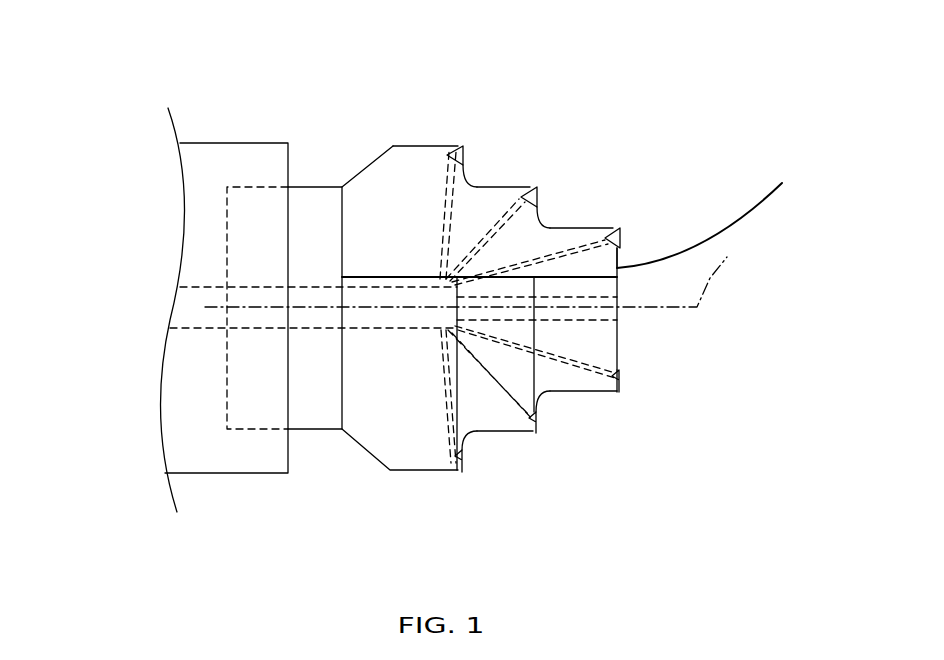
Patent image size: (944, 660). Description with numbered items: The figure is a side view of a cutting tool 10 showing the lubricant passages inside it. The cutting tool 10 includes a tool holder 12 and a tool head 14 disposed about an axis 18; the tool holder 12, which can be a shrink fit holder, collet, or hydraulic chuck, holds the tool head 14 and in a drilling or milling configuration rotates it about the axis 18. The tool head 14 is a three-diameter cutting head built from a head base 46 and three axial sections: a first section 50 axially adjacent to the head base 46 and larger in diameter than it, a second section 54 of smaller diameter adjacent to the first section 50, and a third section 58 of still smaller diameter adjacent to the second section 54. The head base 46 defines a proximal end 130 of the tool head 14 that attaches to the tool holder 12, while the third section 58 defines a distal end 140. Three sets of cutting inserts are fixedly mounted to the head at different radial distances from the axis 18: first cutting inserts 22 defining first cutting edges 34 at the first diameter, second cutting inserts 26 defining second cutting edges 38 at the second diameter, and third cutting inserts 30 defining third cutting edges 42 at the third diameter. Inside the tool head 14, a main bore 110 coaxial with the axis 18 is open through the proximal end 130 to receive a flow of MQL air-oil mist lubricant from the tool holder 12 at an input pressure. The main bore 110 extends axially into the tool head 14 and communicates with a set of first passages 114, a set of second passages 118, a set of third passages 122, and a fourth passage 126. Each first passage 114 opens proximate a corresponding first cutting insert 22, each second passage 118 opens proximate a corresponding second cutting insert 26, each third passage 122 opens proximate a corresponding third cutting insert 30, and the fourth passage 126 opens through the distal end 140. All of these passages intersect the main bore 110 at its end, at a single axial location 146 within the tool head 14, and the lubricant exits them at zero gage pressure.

The cutting tool 10 is at (272, 45).
The tool holder 12 is at (207, 148).
The tool head 14 is at (360, 427).
The axis 18 is at (479, 271).
The first cutting inserts 22 is at (463, 147).
The second cutting inserts 26 is at (536, 186).
The third cutting inserts 30 is at (617, 230).
The first cutting edges 34 is at (465, 160).
The second cutting edges 38 is at (548, 218).
The third cutting edges 42 is at (620, 235).
The head base 46 is at (315, 418).
The first section 50 is at (402, 170).
The second section 54 is at (477, 198).
The third section 58 is at (562, 247).
The main bore 110 is at (322, 287).
The first passages 114 is at (440, 277).
The second passages 118 is at (445, 280).
The third passages 122 is at (623, 258).
The fourth passage 126 is at (600, 320).
The proximal end 130 is at (227, 380).
The distal end 140 is at (715, 214).
The single axial location 146 is at (447, 313).